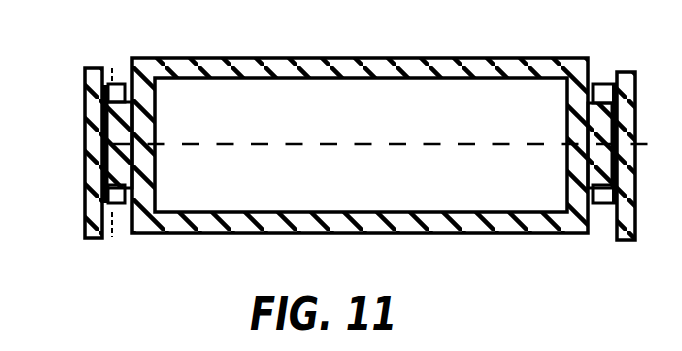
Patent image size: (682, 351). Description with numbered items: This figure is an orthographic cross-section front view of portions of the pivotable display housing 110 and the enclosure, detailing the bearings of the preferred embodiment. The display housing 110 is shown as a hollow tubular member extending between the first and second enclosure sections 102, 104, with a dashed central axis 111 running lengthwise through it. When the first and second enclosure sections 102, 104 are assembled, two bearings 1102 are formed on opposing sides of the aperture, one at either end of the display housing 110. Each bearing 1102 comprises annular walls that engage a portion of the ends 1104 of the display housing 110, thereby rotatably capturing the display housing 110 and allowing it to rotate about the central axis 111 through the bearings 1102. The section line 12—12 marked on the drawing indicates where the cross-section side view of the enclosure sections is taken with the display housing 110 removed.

The first enclosure section 102 is at (681, 67).
The second enclosure section 104 is at (85, 218).
The display housing 110 is at (240, 57).
The central axis 111 is at (67, 143).
The section line 12— 12 is at (112, 57).
The bearing 1102 is at (117, 205).
The end of display housing 1104 is at (118, 112).